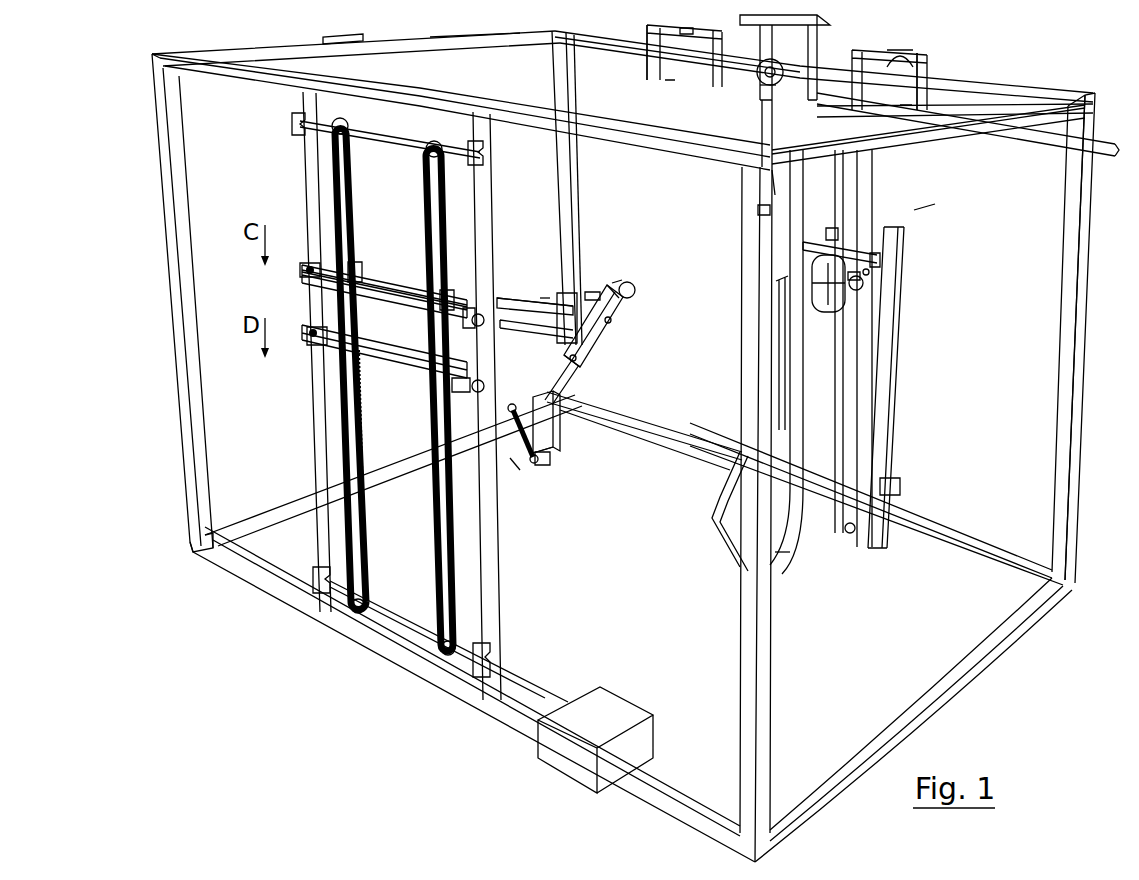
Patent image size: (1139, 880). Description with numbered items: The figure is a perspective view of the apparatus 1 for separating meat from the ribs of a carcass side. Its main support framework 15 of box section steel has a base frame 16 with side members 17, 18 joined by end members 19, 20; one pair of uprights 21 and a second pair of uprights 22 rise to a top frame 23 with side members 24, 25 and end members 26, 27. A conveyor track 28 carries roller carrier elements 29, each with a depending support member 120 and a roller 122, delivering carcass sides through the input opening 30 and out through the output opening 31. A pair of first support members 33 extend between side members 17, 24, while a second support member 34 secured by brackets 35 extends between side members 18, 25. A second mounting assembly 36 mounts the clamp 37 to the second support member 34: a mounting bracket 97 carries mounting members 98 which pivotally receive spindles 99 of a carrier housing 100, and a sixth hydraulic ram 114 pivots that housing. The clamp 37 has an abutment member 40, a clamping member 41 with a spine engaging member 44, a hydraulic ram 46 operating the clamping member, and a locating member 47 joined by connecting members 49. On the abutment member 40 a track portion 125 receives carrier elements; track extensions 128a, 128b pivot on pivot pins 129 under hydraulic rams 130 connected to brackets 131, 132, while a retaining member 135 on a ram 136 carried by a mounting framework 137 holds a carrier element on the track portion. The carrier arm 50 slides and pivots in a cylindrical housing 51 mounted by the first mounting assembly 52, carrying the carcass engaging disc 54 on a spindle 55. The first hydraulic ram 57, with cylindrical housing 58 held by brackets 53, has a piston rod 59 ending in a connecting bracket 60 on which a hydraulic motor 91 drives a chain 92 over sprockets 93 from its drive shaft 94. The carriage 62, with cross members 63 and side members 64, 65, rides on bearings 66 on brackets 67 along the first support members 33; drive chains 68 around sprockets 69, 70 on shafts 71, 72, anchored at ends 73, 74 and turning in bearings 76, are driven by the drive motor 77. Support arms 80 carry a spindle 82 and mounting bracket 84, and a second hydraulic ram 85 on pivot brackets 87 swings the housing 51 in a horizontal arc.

The apparatus 1 is at (96, 93).
The main support framework 15 is at (170, 212).
The base frame 16 is at (222, 563).
The side member 17 is at (695, 818).
The side member 18 is at (992, 562).
The end member 19 is at (1010, 640).
The end member 20 is at (242, 520).
The uprights 21 is at (1090, 210).
The uprights 22 is at (550, 88).
The top frame 23 is at (581, 45).
The side member 24 is at (218, 78).
The side member 25 is at (1027, 88).
The end member 26 is at (993, 125).
The end member 27 is at (275, 52).
The conveyor track 28 is at (348, 37).
The roller carrier elements 29 is at (758, 212).
The input opening 30 is at (1078, 330).
The output opening 31 is at (490, 48).
The first support members 33 is at (318, 535).
The second support member 34 is at (857, 365).
The brackets 35 is at (882, 480).
The second mounting assembly 36 is at (908, 212).
The clamp 37 is at (800, 545).
The carcass abutment member 40 is at (803, 385).
The clamping member 41 is at (715, 510).
The spine engaging member 44 is at (778, 292).
The double acting hydraulic ram 46 is at (790, 552).
The locating member 47 is at (895, 412).
The connecting members 49 is at (882, 260).
The carrier arm 50 is at (618, 305).
The cylindrical housing 51 is at (605, 345).
The first mounting assembly 52 is at (527, 227).
The brackets 53 is at (612, 322).
The carcass engaging disc 54 is at (619, 282).
The spindle 55 is at (631, 283).
The first hydraulic ram 57 is at (595, 360).
The cylindrical housing 58 is at (615, 418).
The piston rod 59 is at (600, 425).
The connecting bracket 60 is at (562, 428).
The carriage 62 is at (383, 275).
The cross members 63 is at (395, 290).
The side member 64 is at (300, 292).
The side member 65 is at (430, 362).
The bearings 66 is at (318, 265).
The brackets 67 is at (300, 272).
The drive chains 68 is at (330, 162).
The sprockets 69 is at (355, 615).
The sprockets 70 is at (342, 118).
The shaft 71 is at (400, 623).
The shaft 72 is at (375, 130).
The ends 73 is at (356, 262).
The ends 74 is at (361, 356).
The bearings 76 is at (290, 120).
The drive motor 77 is at (580, 775).
The support arms 80 is at (512, 298).
The spindle 82 is at (592, 290).
The mounting bracket 84 is at (545, 338).
The second hydraulic ram 85 is at (568, 295).
The pivot brackets 87 is at (545, 296).
The hydraulic motor 91 is at (558, 447).
The drive chain 92 is at (518, 470).
The sprockets 93 is at (516, 405).
The drive shaft 94 is at (545, 460).
The mounting bracket 97 is at (863, 288).
The mounting members 98 is at (835, 228).
The spindles 99 is at (840, 245).
The carrier housing 100 is at (880, 252).
The sixth hydraulic ram 114 is at (870, 274).
The support member 120 is at (760, 155).
The roller 122 is at (760, 108).
The track portion 125 is at (772, 190).
The track extension 128a is at (836, 152).
The track extension 128b is at (704, 65).
The pivot pins 129 is at (668, 95).
The hydraulic rams 130 is at (672, 34).
The brackets 131 is at (648, 66).
The brackets 132 is at (676, 100).
The retaining member 135 is at (784, 78).
The hydraulic ram 136 is at (772, 45).
The mounting framework 137 is at (822, 22).